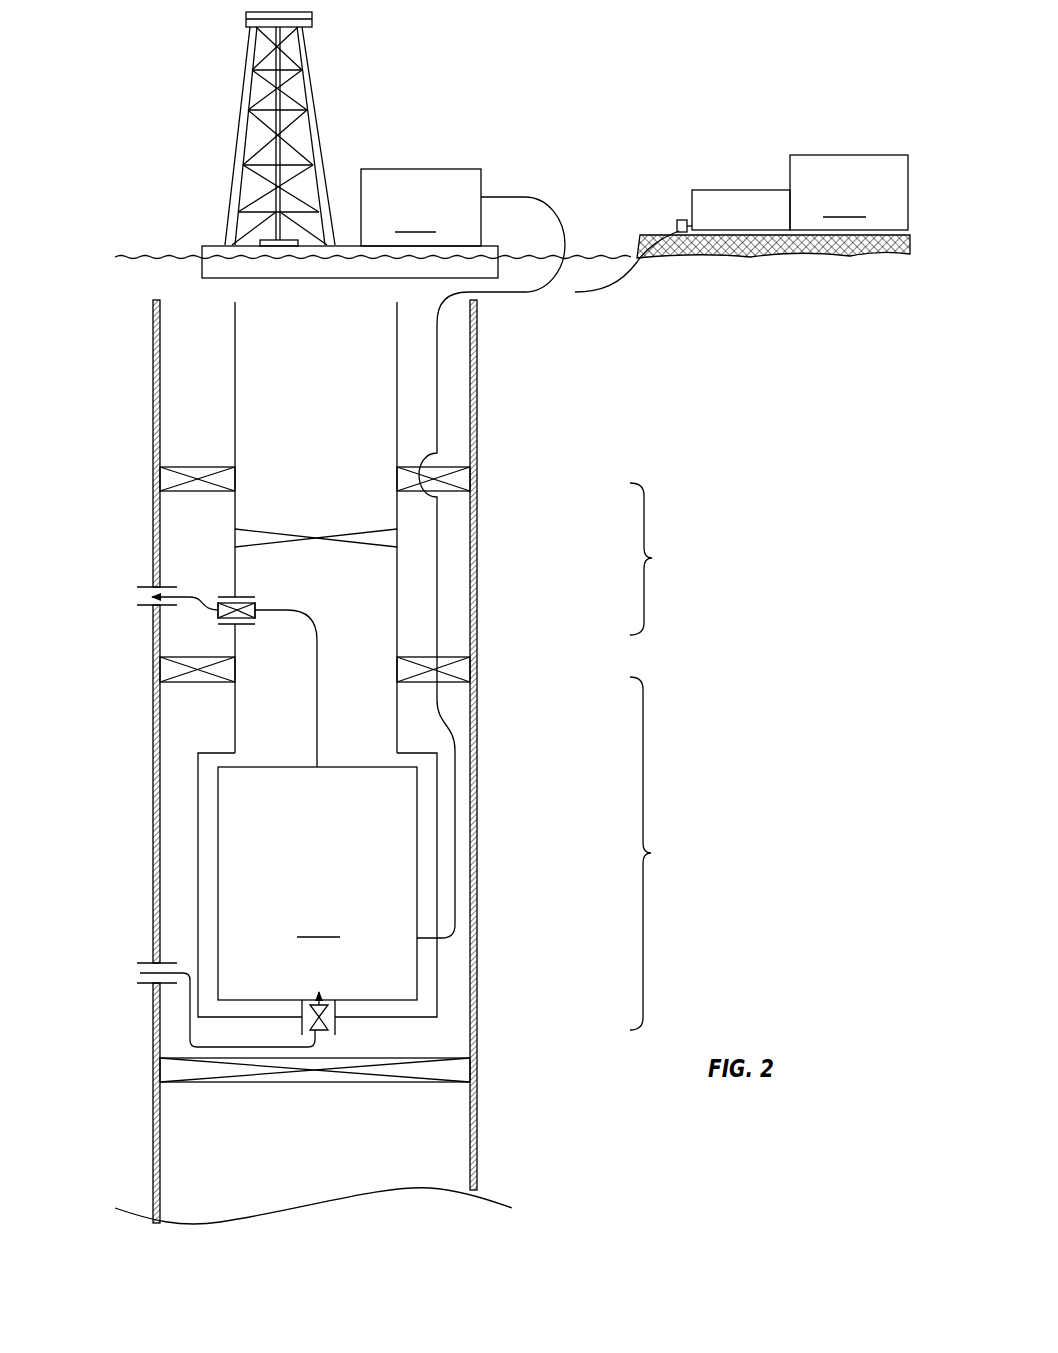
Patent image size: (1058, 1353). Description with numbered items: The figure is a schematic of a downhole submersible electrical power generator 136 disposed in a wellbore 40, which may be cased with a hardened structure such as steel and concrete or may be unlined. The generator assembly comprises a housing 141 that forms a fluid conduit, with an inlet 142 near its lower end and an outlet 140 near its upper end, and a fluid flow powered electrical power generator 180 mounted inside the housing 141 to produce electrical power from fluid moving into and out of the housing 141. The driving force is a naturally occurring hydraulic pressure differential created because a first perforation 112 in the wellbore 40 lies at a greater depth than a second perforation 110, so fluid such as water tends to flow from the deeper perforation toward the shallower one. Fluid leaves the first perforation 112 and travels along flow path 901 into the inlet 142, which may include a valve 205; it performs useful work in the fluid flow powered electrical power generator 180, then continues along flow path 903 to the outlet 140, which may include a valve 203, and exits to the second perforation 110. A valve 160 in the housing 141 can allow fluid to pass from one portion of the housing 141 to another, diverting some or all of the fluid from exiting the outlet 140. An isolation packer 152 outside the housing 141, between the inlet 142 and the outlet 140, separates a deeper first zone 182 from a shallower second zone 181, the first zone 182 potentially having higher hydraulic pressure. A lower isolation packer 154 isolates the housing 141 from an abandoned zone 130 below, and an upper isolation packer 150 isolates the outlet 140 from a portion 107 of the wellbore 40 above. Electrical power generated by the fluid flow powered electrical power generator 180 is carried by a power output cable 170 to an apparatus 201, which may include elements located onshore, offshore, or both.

The wellbore 40 is at (475, 1150).
The portion of the wellbore 107 is at (178, 393).
The second perforation 110 is at (148, 582).
The first perforation 112 is at (148, 960).
The abandoned zone 130 is at (226, 1128).
The downhole submersible electrical power generator 136 is at (128, 718).
The outlet 140 is at (248, 630).
The housing 141 is at (197, 795).
The inlet 142 is at (296, 1027).
The isolation packer 150 is at (468, 475).
The isolation packer 152 is at (480, 670).
The isolation packer 154 is at (468, 1068).
The valve 160 is at (388, 536).
The power output cable 170 is at (455, 845).
The fluid flow powered electrical power generator 180 is at (317, 883).
The second zone 181 is at (652, 558).
The first zone 182 is at (651, 853).
The apparatus 201 is at (634, 200).
The valve 203 is at (248, 600).
The valve 205 is at (327, 1028).
The flow path 901 is at (183, 1007).
The flow path 903 is at (317, 667).